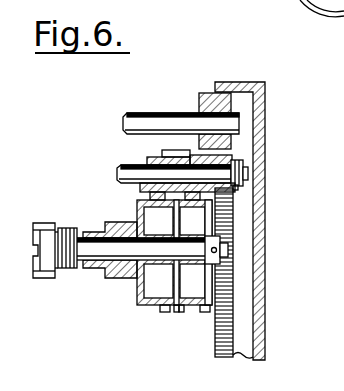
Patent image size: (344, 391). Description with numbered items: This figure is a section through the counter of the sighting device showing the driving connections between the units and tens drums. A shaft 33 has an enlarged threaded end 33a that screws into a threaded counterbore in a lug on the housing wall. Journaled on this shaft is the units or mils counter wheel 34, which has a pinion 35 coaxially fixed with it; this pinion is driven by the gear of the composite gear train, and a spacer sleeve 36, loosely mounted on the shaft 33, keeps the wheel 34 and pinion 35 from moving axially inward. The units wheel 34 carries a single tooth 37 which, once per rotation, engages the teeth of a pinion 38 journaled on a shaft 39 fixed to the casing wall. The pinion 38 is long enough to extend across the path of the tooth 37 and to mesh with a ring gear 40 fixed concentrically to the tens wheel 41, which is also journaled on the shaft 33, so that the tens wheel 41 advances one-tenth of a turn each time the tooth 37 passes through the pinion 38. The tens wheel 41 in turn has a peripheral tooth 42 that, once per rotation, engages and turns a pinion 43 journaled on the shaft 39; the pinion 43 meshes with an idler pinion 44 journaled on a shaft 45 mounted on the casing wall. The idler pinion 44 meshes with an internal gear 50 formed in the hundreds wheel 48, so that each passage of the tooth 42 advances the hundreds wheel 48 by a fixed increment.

The shaft 33 is at (82, 237).
The enlarged threaded end 33a is at (67, 228).
The units counter wheel 34 is at (140, 296).
The pinion 35 is at (104, 276).
The spacer sleeve 36 is at (86, 270).
The single tooth 37 is at (165, 312).
The pinion 38 is at (156, 157).
The shaft 39 is at (120, 169).
The ring gear 40 is at (176, 312).
The tens wheel 41 is at (182, 312).
The tooth 42 is at (205, 312).
The pinion 43 is at (236, 163).
The idler pinion 44 is at (203, 93).
The shaft 45 is at (135, 113).
The hundreds wheel 48 is at (265, 312).
The internal gear 50 is at (223, 357).